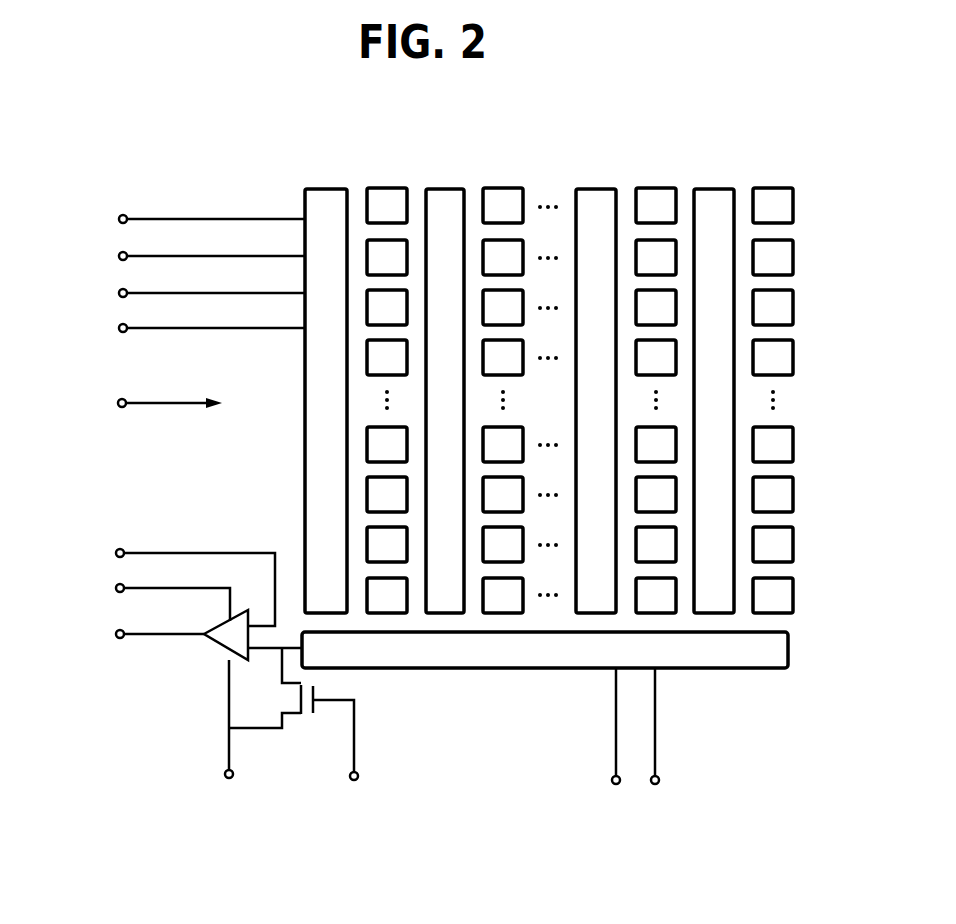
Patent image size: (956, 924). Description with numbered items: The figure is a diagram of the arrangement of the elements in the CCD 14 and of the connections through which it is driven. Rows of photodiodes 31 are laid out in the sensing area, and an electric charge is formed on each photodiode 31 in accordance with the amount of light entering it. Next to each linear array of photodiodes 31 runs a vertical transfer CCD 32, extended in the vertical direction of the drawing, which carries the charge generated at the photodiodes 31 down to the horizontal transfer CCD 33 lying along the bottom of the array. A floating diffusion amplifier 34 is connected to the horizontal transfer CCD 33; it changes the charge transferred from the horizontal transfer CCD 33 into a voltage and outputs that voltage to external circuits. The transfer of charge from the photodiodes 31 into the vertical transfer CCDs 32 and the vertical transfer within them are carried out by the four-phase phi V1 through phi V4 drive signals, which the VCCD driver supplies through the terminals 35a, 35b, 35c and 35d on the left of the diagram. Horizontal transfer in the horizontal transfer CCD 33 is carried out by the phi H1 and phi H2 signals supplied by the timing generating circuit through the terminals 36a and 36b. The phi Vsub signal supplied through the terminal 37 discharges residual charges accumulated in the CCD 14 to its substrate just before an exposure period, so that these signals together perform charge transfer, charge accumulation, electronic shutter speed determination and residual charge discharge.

The CCD 14 is at (733, 168).
The photodiode 31 is at (660, 596).
The vertical transfer CCD 32 is at (707, 197).
The horizontal transfer CCD 33 is at (480, 669).
The floating diffusion amplifier 34 is at (220, 645).
The terminal 35a is at (125, 213).
The terminal 35b is at (127, 253).
The terminal 35c is at (127, 295).
The terminal 35d is at (127, 333).
The terminal 36a is at (612, 777).
The terminal 36b is at (658, 777).
The terminal 37 is at (125, 407).